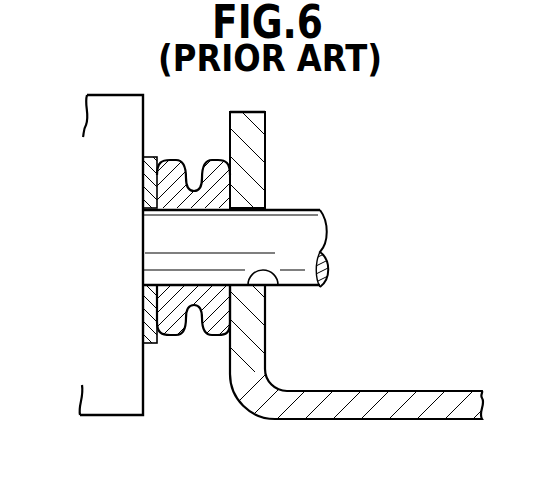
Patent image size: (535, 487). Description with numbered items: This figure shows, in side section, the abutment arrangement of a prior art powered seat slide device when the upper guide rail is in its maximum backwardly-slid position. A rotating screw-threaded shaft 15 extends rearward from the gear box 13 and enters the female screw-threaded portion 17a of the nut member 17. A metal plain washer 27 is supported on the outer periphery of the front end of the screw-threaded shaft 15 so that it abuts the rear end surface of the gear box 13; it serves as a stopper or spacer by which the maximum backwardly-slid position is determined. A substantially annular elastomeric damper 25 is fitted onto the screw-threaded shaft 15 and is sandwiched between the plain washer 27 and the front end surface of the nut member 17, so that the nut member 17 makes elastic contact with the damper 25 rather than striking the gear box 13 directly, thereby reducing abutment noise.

The gear box 13 is at (125, 398).
The screw-threaded shaft 15 is at (302, 262).
The nut member 17 is at (355, 410).
The female screw-threaded portion 17a is at (277, 280).
The elastomeric damper 25 is at (170, 318).
The plain washer 27 is at (150, 182).